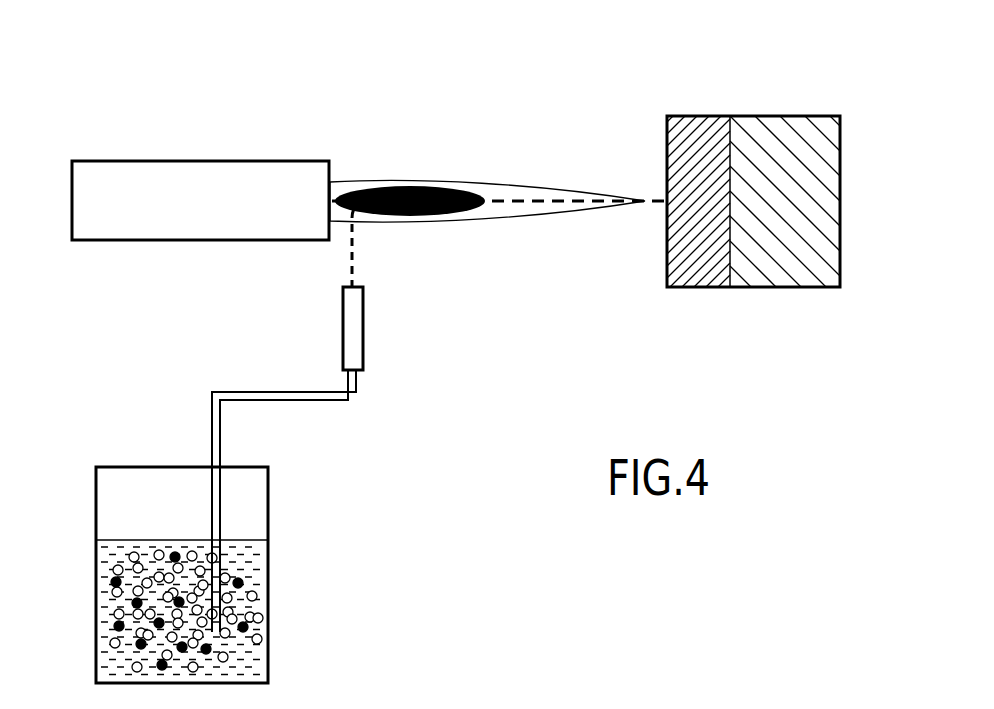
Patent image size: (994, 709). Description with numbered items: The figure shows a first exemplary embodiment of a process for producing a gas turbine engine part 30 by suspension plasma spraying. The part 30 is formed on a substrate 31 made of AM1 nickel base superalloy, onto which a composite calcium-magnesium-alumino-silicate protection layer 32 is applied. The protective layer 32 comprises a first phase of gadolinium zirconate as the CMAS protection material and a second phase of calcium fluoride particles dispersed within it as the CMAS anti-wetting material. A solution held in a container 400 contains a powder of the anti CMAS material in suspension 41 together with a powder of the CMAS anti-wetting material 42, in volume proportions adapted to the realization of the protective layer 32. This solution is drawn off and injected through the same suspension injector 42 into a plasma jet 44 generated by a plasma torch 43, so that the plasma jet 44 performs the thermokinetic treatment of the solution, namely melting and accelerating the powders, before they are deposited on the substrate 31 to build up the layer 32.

The gas turbine engine part 30 is at (784, 105).
The substrate 31 is at (770, 277).
The protective layer 32 is at (694, 279).
The powder of the anti CMAS material in suspension 41 is at (262, 618).
The suspension injector 42 is at (357, 325).
The plasma torch 43 is at (208, 215).
The plasma jet 44 is at (494, 222).
The suspension container 400 is at (240, 539).